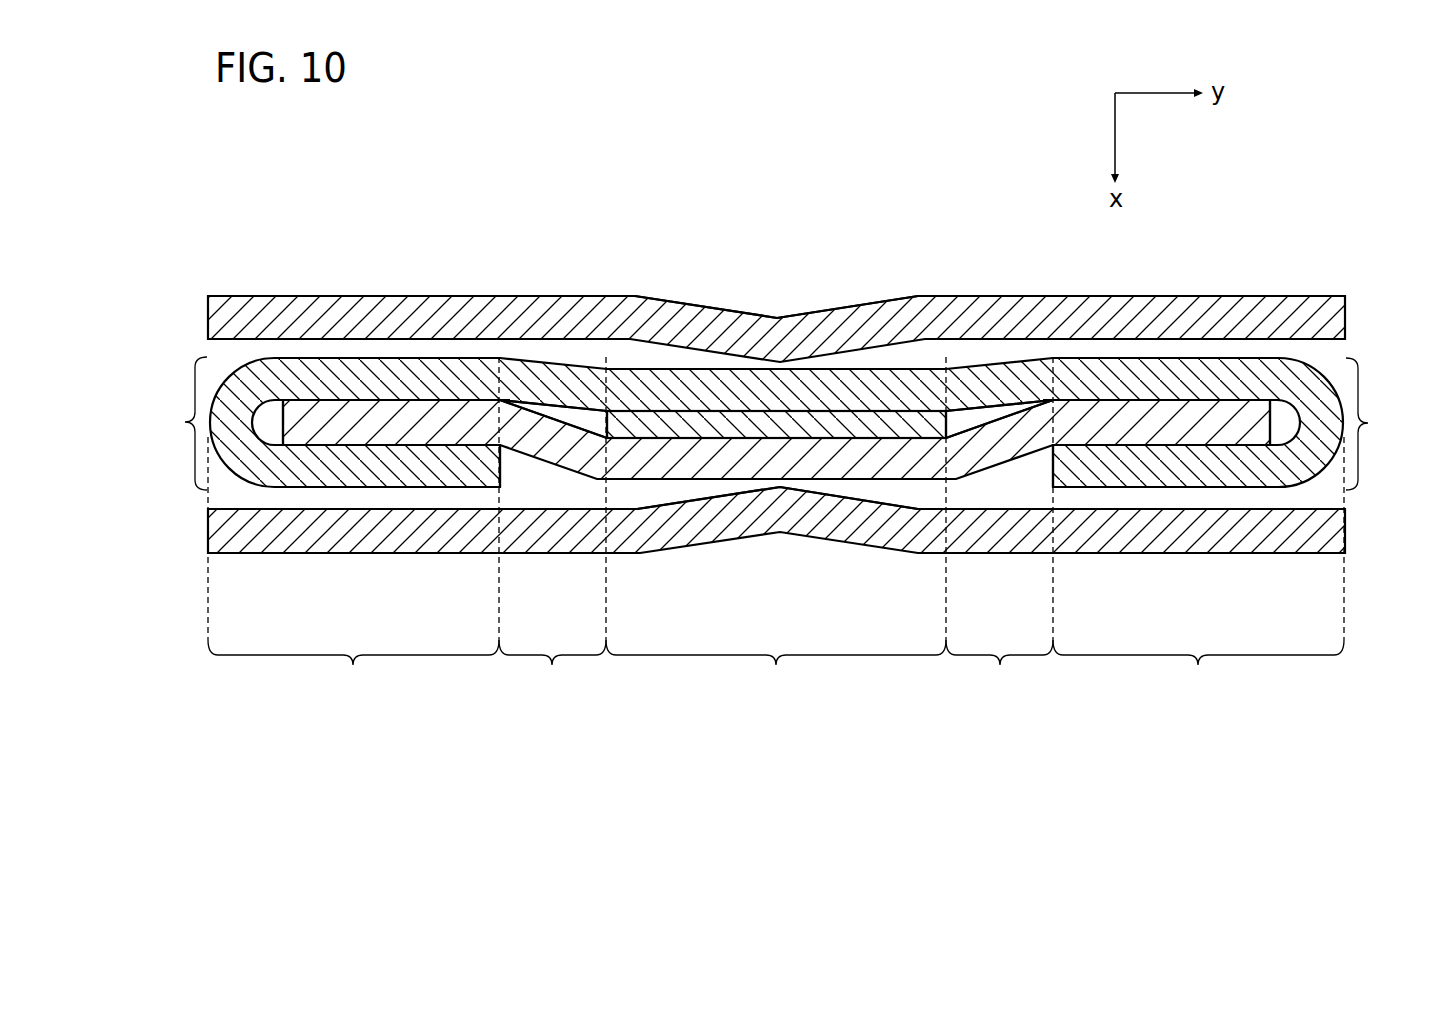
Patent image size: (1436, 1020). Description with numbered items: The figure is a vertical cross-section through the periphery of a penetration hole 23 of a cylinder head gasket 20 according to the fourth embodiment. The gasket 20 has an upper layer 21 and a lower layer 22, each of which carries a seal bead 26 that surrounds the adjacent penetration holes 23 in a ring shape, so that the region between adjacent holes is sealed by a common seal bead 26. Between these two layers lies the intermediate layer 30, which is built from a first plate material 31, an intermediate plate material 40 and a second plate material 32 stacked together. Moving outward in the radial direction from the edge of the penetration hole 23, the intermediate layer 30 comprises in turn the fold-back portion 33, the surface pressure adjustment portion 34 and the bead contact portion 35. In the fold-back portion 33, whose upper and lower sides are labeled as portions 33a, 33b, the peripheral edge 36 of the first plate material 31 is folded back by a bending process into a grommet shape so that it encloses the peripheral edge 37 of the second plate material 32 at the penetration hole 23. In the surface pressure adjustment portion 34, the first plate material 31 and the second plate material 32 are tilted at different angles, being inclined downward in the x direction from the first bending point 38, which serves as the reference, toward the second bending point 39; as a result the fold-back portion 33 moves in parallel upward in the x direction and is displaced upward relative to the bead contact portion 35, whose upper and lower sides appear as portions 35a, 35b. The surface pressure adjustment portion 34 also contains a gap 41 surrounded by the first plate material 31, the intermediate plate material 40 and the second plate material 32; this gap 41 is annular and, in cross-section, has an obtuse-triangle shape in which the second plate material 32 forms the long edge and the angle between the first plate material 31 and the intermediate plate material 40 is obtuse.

The gasket 20 is at (533, 236).
The upper layer 21 is at (207, 311).
The lower layer 22 is at (207, 529).
The penetration hole 23 is at (182, 378).
The seal bead 26 is at (777, 317).
The intermediate layer 30 is at (776, 425).
The first plate material 31 is at (705, 390).
The second plate material 32 is at (705, 462).
The fold-back portion 33 is at (776, 565).
The upper portion of end region 33a is at (350, 357).
The lower portion of end region 33b is at (350, 489).
The surface pressure adjustment portion 34 is at (776, 525).
The bead contact portion 35 is at (776, 667).
The upper portion of central region 35a is at (860, 368).
The lower portion of central region 35b is at (860, 480).
The peripheral edge 36 is at (503, 470).
The peripheral edge 37 is at (279, 424).
The first bending point 38 is at (500, 404).
The second bending point 39 is at (607, 410).
The intermediate plate material 40 is at (803, 425).
The gap 41 is at (576, 414).